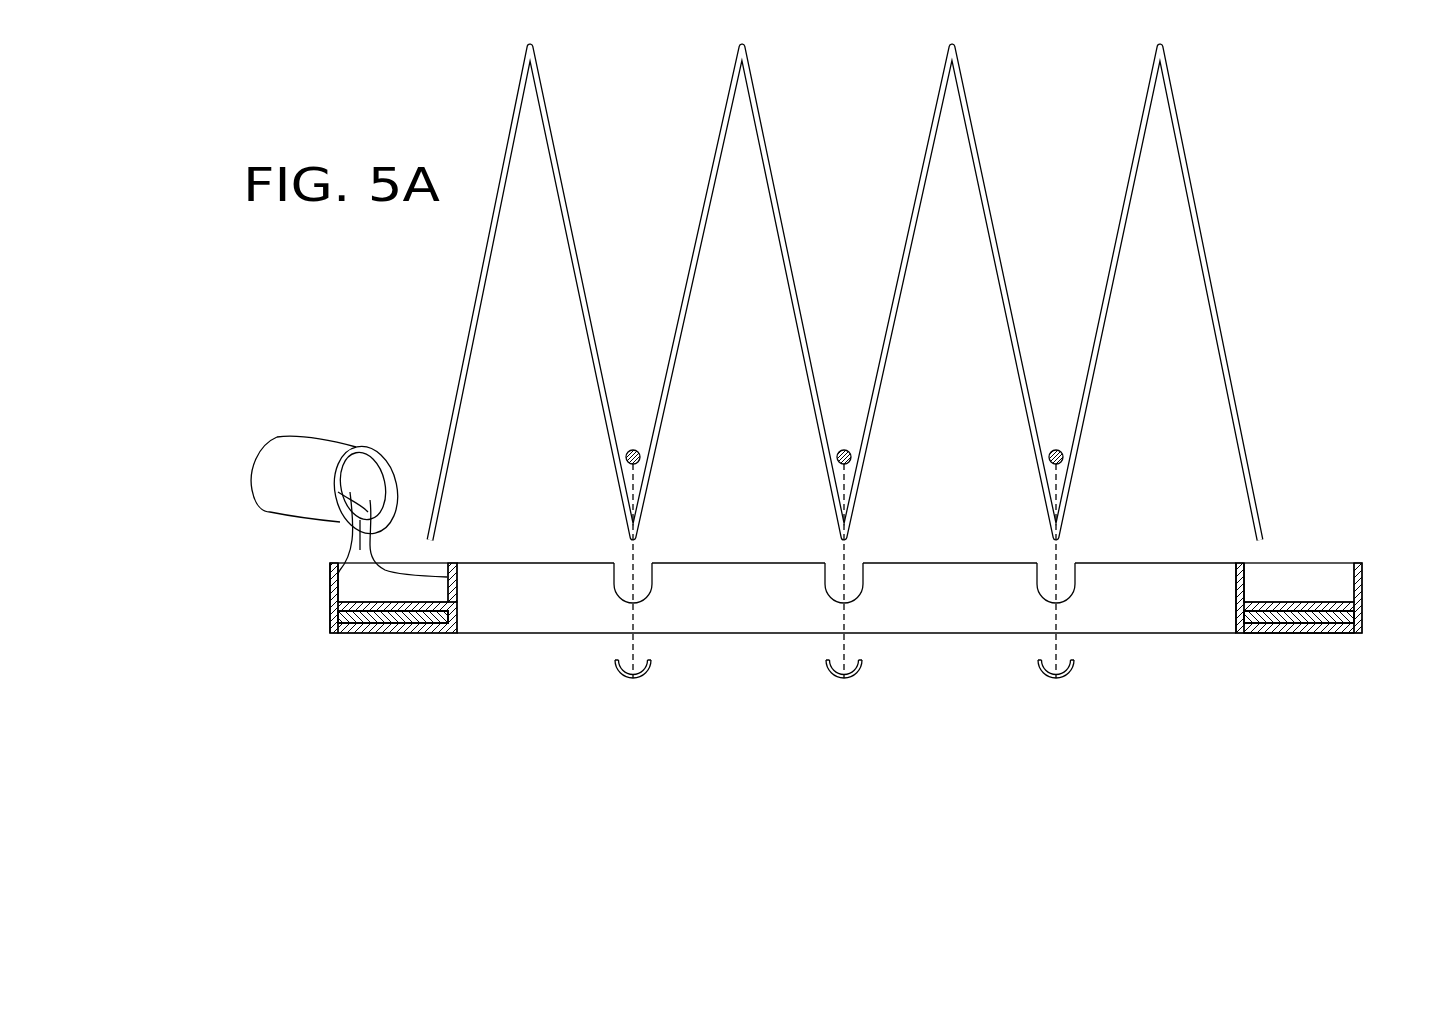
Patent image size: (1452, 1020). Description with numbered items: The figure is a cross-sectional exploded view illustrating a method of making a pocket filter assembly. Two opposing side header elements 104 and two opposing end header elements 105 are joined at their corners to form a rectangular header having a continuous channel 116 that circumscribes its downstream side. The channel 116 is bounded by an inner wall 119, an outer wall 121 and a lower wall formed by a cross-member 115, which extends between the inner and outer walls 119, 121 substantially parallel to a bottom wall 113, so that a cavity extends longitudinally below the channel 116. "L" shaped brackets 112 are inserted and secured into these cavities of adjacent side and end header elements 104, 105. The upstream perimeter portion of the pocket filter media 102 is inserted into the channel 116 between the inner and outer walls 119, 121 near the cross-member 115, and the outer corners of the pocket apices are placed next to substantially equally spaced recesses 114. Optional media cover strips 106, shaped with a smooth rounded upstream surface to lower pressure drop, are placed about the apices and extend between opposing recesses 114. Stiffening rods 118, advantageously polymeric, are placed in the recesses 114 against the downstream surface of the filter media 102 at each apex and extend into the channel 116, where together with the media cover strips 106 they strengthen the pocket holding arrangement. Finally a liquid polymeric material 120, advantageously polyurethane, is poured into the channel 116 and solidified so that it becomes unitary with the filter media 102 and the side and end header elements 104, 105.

The pocket filter media 102 is at (725, 106).
The side header element 104 is at (330, 626).
The end header element 105 is at (1130, 625).
The media cover strip 106 is at (651, 661).
The "L" shaped bracket 112 is at (377, 633).
The bottom wall 113 is at (1310, 633).
The recess 114 is at (627, 588).
The cross-member 115 is at (1322, 608).
The channel 116 is at (349, 566).
The stiffening rod 118 is at (632, 449).
The inner wall 119 is at (1236, 593).
The liquid polymeric material 120 is at (386, 530).
The outer wall 121 is at (330, 593).